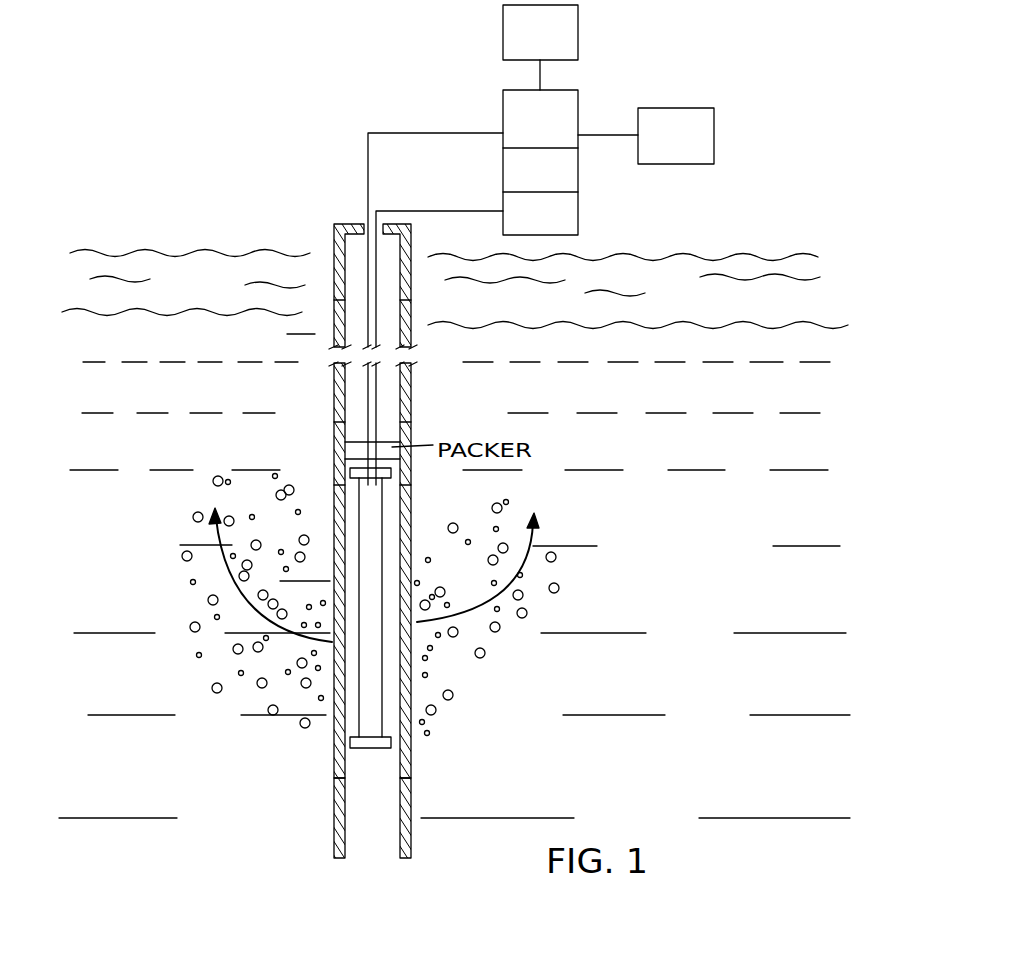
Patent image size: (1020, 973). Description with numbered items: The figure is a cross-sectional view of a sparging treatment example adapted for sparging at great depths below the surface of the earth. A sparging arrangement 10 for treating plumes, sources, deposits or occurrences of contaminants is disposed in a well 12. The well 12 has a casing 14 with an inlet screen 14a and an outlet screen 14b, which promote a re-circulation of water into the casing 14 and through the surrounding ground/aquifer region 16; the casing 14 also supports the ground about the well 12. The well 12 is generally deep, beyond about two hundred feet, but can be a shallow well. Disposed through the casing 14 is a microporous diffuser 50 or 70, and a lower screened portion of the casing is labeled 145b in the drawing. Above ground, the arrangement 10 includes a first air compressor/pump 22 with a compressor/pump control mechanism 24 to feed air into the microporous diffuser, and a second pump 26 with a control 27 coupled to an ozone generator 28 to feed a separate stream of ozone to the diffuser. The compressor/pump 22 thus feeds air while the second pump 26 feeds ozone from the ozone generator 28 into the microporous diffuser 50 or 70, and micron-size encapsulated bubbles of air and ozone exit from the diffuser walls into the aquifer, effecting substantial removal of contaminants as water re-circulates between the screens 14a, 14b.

The sparging arrangement 10 is at (213, 144).
The well 12 is at (362, 530).
The casing 14 is at (413, 242).
The inlet screen 14a is at (334, 468).
The outlet screen 14b is at (332, 795).
The ground/aquifer region 16 is at (167, 402).
The first air compressor/pump 22 is at (535, 162).
The compressor/pump control mechanism 24 is at (503, 168).
The second pump 26 is at (503, 113).
The control 27 is at (580, 33).
The ozone generator 28 is at (714, 137).
The microporous diffuser 50 is at (588, 613).
The microporous diffuser 70 is at (383, 513).
The lower casing screen 145b is at (412, 575).